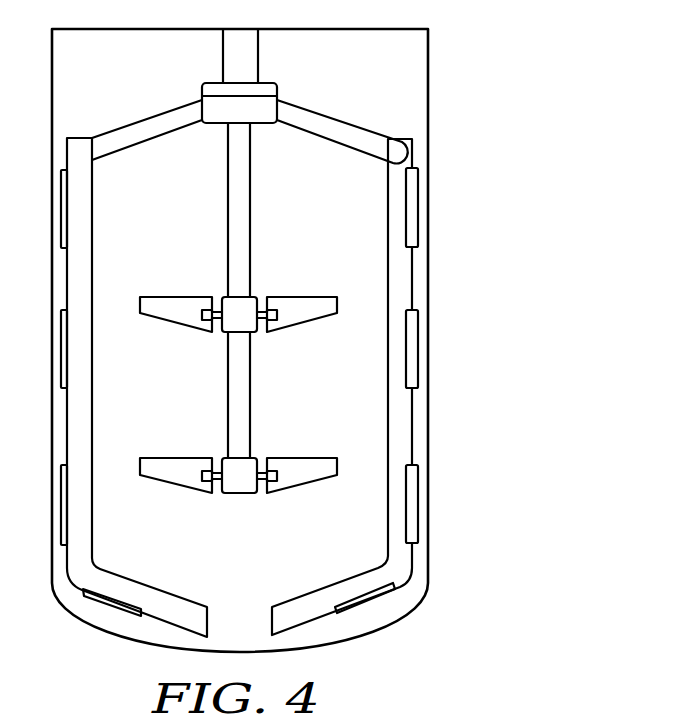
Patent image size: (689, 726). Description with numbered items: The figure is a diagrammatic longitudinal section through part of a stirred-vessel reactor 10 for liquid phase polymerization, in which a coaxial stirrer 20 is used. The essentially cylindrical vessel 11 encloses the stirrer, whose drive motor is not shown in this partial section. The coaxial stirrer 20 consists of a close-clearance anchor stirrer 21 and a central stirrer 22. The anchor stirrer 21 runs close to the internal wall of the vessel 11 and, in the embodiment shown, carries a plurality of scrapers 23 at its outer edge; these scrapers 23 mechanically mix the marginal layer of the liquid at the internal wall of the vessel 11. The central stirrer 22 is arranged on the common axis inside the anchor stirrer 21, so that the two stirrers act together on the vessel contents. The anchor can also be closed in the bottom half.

The stirred-vessel reactor 10 is at (329, 340).
The vessel 11 is at (428, 133).
The coaxial stirrer 20 is at (392, 86).
The anchor stirrer 21 is at (395, 285).
The central stirrer 22 is at (308, 441).
The scrapers 23 is at (413, 348).